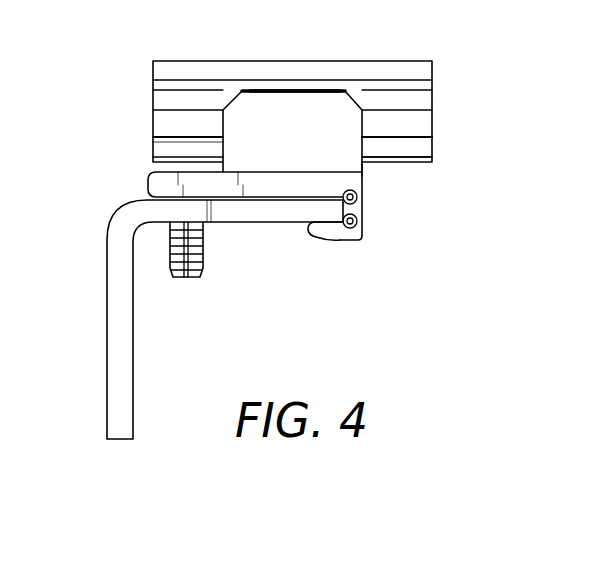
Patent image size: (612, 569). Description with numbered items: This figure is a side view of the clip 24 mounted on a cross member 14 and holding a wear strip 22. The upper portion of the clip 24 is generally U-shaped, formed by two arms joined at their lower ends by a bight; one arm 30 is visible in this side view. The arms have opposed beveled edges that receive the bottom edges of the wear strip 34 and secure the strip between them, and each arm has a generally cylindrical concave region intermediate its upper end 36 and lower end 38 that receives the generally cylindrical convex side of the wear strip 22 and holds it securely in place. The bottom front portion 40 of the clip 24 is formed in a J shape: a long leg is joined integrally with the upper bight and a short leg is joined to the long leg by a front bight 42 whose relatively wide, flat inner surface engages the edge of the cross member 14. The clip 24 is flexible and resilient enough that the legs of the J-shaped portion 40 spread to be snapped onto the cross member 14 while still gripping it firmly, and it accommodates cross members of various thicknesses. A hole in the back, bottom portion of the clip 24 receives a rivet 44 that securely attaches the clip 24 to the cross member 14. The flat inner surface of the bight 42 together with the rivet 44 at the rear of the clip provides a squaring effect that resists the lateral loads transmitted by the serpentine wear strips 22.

The cross member 14 is at (113, 306).
The wear strip 22 is at (420, 70).
The clip 24 is at (368, 204).
The arm 30 is at (247, 121).
The bottom edges of the wear strip 34 is at (422, 150).
The upper end 36 is at (356, 88).
The lower end 38 is at (367, 170).
The bottom front portion 40 is at (330, 247).
The front bight 42 is at (362, 232).
The rivet 44 is at (193, 278).